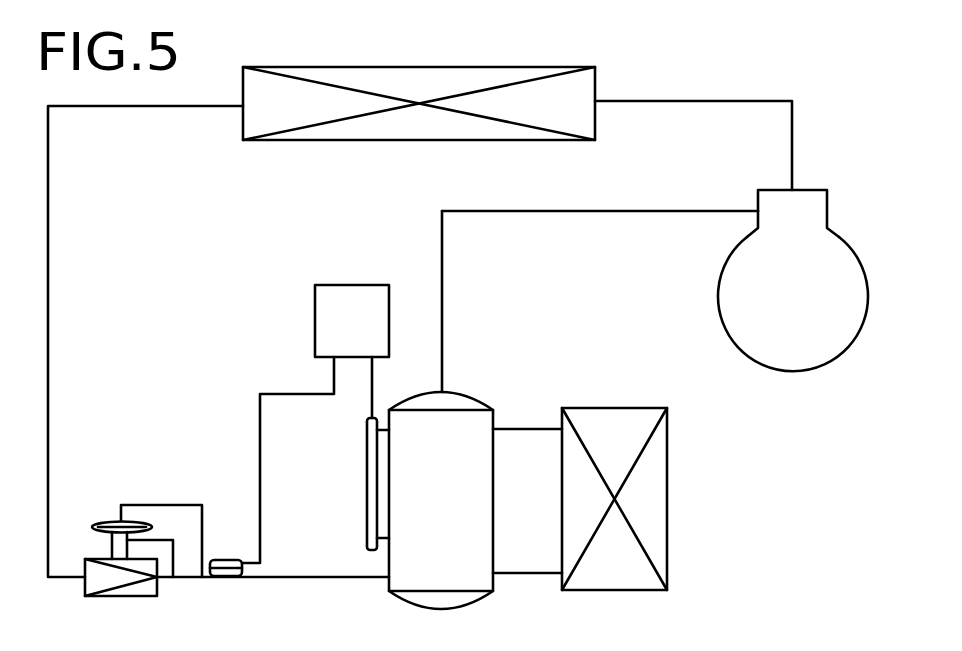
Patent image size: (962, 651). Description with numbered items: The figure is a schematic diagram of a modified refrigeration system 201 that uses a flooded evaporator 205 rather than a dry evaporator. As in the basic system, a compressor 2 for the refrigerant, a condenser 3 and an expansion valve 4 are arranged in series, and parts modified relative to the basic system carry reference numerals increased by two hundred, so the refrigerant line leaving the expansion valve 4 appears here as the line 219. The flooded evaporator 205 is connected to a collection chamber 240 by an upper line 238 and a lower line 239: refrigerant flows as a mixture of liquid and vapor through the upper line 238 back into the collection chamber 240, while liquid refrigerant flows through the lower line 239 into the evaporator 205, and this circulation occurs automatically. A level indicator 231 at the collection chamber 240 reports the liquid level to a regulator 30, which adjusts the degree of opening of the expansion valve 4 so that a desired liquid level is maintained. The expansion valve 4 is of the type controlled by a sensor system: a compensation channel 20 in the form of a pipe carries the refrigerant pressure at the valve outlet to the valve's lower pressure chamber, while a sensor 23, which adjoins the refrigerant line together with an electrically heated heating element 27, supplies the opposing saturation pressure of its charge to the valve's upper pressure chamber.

The compressor 2 is at (836, 248).
The condenser 3 is at (468, 127).
The expansion valve 4 is at (104, 508).
The compensation channel 20 is at (174, 560).
The sensor 23 is at (262, 466).
The heating element 27 is at (224, 557).
The regulator 30 is at (365, 333).
The refrigeration system 201 is at (254, 279).
The flooded evaporator 205 is at (657, 490).
The liquid line 219 is at (305, 578).
The level indicator 231 is at (346, 484).
The upper line 238 is at (513, 425).
The lower line 239 is at (510, 570).
The collection chamber 240 is at (468, 492).